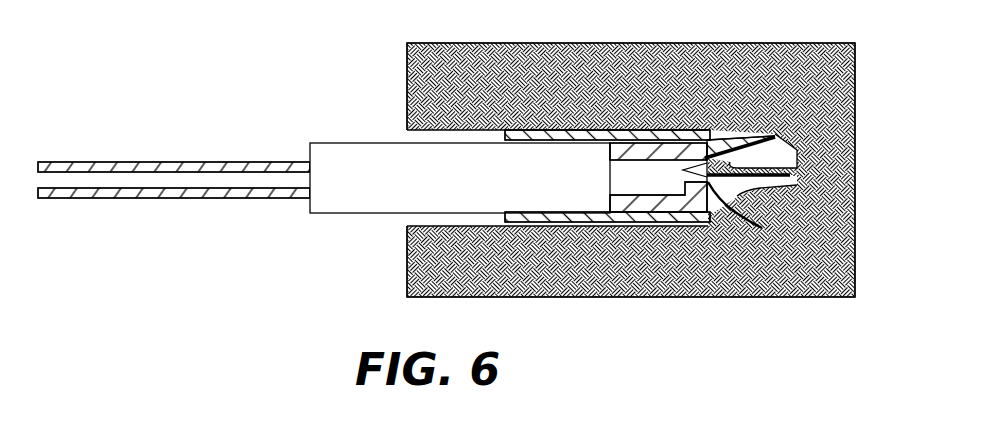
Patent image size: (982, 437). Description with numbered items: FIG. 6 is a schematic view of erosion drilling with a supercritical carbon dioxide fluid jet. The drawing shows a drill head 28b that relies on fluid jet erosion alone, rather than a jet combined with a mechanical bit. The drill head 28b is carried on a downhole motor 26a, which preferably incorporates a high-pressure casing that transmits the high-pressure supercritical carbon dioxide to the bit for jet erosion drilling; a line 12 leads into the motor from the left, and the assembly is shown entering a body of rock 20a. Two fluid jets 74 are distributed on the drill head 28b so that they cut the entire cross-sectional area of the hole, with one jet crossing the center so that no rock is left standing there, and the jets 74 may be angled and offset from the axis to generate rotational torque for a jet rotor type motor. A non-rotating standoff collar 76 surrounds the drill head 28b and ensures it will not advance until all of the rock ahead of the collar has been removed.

The cable 12 is at (175, 198).
The foam block 20a is at (632, 297).
The downhole motor 26a is at (335, 214).
The drill head 28b is at (622, 180).
The fluid jets 74 is at (722, 150).
The non-rotating standoff collar 76 is at (548, 141).